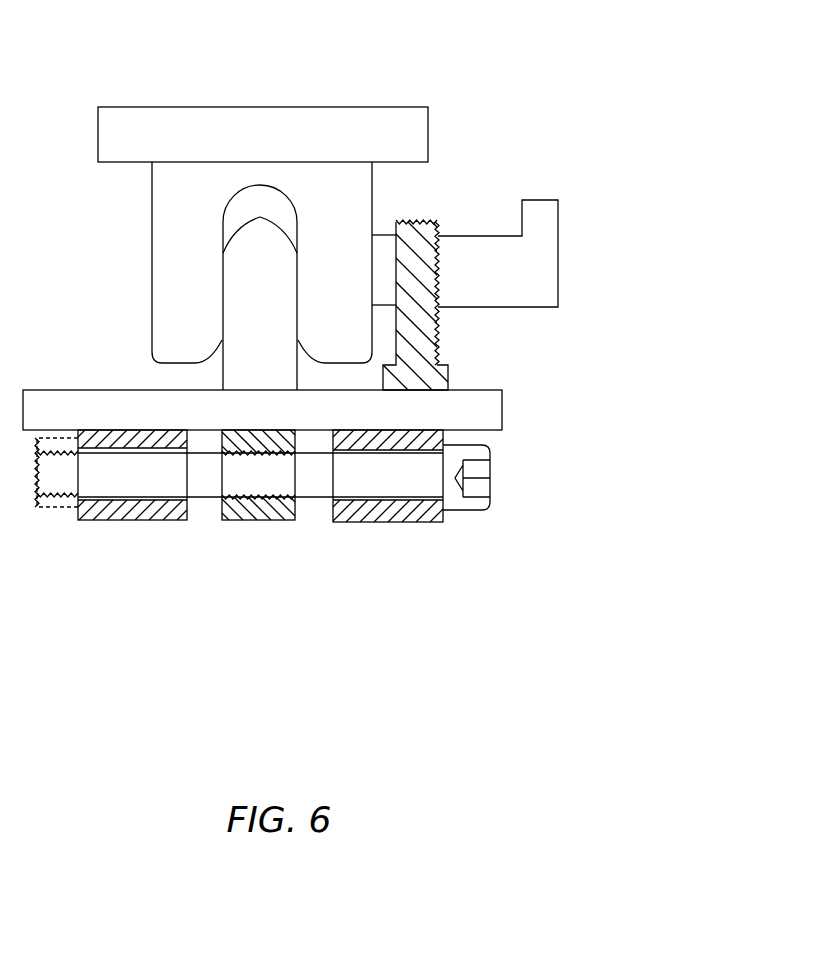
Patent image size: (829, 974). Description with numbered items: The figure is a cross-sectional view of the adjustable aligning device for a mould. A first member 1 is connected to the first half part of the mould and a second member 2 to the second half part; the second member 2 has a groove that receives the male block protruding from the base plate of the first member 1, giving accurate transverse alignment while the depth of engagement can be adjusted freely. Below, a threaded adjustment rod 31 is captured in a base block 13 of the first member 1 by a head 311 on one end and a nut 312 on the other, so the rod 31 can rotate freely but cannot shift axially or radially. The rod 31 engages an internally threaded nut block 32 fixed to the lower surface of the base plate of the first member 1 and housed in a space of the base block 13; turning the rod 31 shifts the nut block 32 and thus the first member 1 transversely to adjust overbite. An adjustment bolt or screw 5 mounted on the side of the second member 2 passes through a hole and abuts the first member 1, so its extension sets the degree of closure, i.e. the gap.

The first member 1 is at (255, 262).
The second member 2 is at (338, 196).
The adjustment bolt or screw 5 is at (414, 252).
The base block 13 is at (385, 513).
The threaded adjustment rod 31 is at (193, 478).
The nut block 32 is at (262, 522).
The head 311 is at (455, 498).
The nut 312 is at (58, 498).